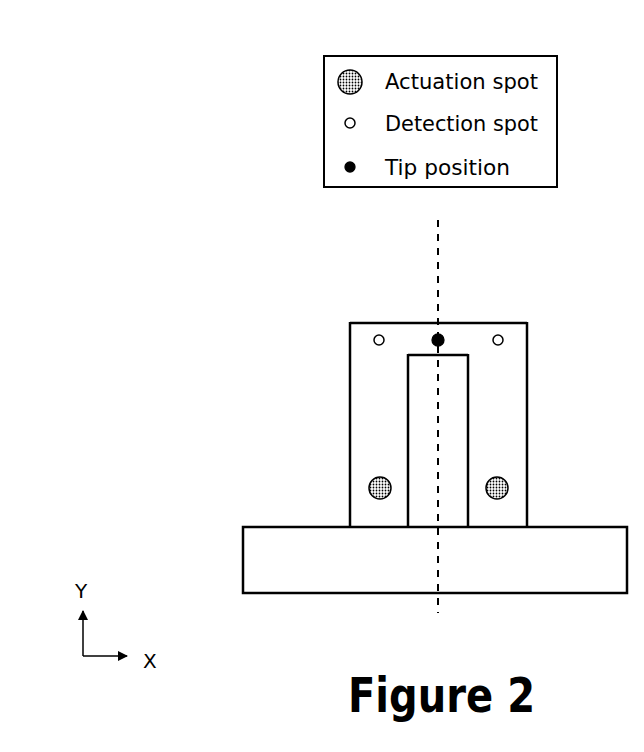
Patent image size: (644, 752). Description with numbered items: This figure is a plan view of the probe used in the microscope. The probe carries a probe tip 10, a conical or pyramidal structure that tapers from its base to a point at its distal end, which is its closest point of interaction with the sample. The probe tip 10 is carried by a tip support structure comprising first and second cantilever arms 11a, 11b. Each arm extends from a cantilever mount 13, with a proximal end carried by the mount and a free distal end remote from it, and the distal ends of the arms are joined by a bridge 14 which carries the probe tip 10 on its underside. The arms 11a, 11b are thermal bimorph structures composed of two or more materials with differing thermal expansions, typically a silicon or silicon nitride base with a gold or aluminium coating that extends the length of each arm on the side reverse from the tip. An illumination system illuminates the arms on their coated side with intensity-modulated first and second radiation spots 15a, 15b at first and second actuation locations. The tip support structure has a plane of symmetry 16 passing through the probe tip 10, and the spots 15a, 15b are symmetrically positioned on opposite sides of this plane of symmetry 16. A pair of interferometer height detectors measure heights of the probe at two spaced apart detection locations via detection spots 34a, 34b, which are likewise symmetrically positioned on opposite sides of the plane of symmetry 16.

The probe tip 10 is at (445, 335).
The first cantilever arm 11a is at (360, 390).
The second cantilever arm 11b is at (510, 423).
The cantilever mount 13 is at (255, 540).
The bridge 14 is at (417, 330).
The first radiation spot 15a is at (370, 482).
The second radiation spot 15b is at (512, 485).
The plane of symmetry 16 is at (437, 605).
The first detection spot 34a is at (375, 336).
The second detection spot 34b is at (502, 337).